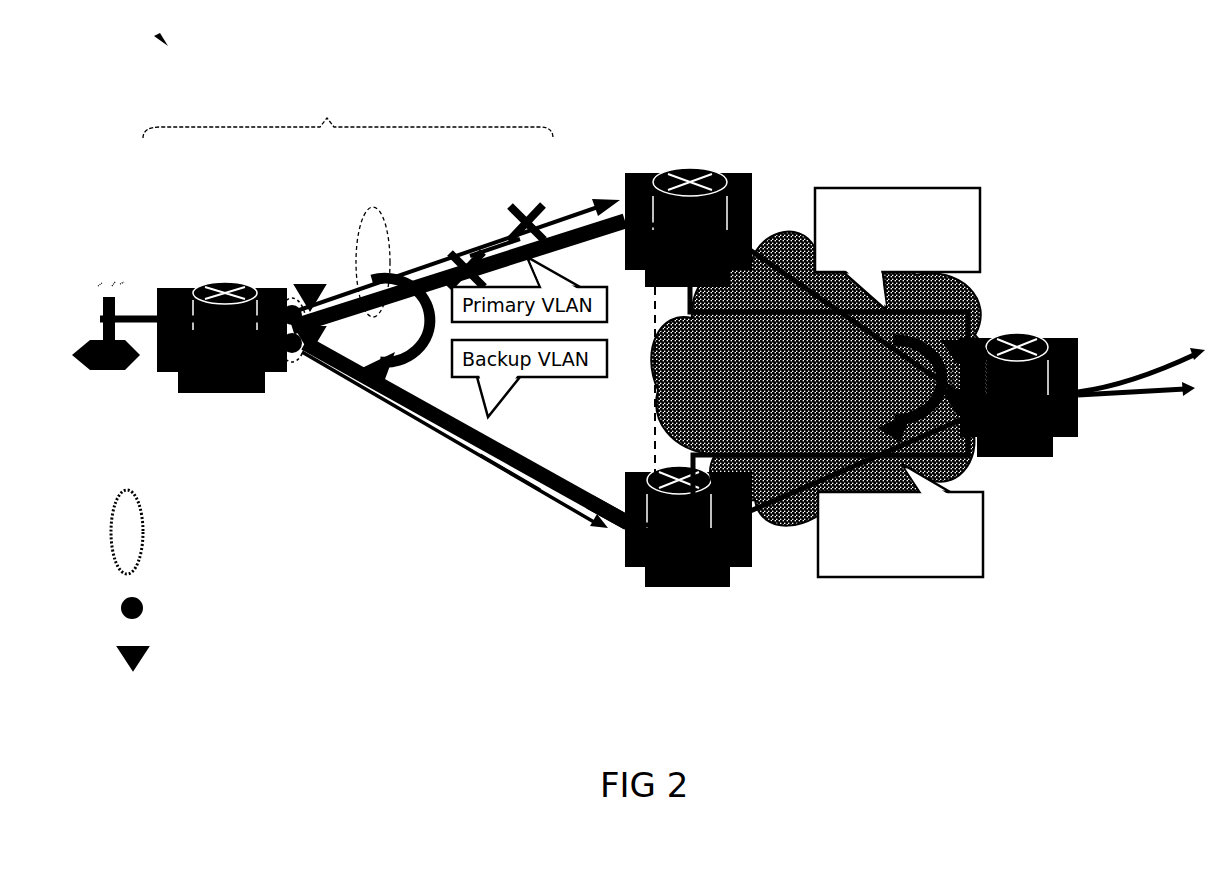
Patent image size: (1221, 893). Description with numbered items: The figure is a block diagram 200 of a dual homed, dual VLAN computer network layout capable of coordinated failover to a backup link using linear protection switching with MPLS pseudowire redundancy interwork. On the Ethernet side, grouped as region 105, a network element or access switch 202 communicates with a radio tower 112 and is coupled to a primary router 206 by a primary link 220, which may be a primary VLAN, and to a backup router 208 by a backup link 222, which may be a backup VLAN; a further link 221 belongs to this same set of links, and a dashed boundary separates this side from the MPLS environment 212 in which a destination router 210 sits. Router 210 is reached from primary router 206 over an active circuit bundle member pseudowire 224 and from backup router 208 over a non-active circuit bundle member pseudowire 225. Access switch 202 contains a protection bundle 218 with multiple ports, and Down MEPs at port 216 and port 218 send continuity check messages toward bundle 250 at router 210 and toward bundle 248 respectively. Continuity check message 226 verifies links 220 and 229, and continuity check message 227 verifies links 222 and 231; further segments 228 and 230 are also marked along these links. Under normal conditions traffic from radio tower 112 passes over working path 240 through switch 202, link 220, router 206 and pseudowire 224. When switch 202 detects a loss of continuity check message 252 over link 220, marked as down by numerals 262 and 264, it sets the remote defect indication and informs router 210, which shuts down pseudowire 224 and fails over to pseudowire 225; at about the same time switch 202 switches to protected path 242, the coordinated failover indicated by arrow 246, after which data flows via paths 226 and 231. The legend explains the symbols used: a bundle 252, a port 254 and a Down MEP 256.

The block diagram 200 is at (155, 40).
The customer edge segment 105 is at (348, 114).
The radio tower 112 is at (117, 358).
The network element (AS) 202 is at (216, 285).
The primary router 206 is at (640, 175).
The backup router 208 is at (630, 565).
The destination router 210 is at (1060, 445).
The MPLS network cloud 212 is at (820, 379).
The G.8031 port 216 is at (301, 288).
The G.8031 bundle 218 is at (312, 366).
The primary link 220 is at (597, 237).
The link 221 is at (653, 360).
The backup link 222 is at (405, 372).
The active PWE link 224 is at (801, 285).
The non-active circuit bundle member PW 225 is at (803, 480).
The 802.1ag message 226 is at (372, 394).
The 802.1ag message 227 is at (588, 191).
The primary path segment 228 is at (490, 237).
The link 229 is at (758, 243).
The backup link end segment 230 is at (585, 468).
The link 231 is at (788, 510).
The working path 240 is at (378, 212).
The protected path 242 is at (502, 470).
The arrow 246 is at (396, 330).
The G.8031 bundle 248 is at (910, 391).
The G.8031 bundle 250 is at (985, 318).
The G.8031 bundle 252 is at (112, 522).
The G.8031 port 254 is at (120, 607).
The down MEP legend symbol 256 is at (115, 650).
The link-down indication 262 is at (530, 207).
The link-down indication 264 is at (452, 250).